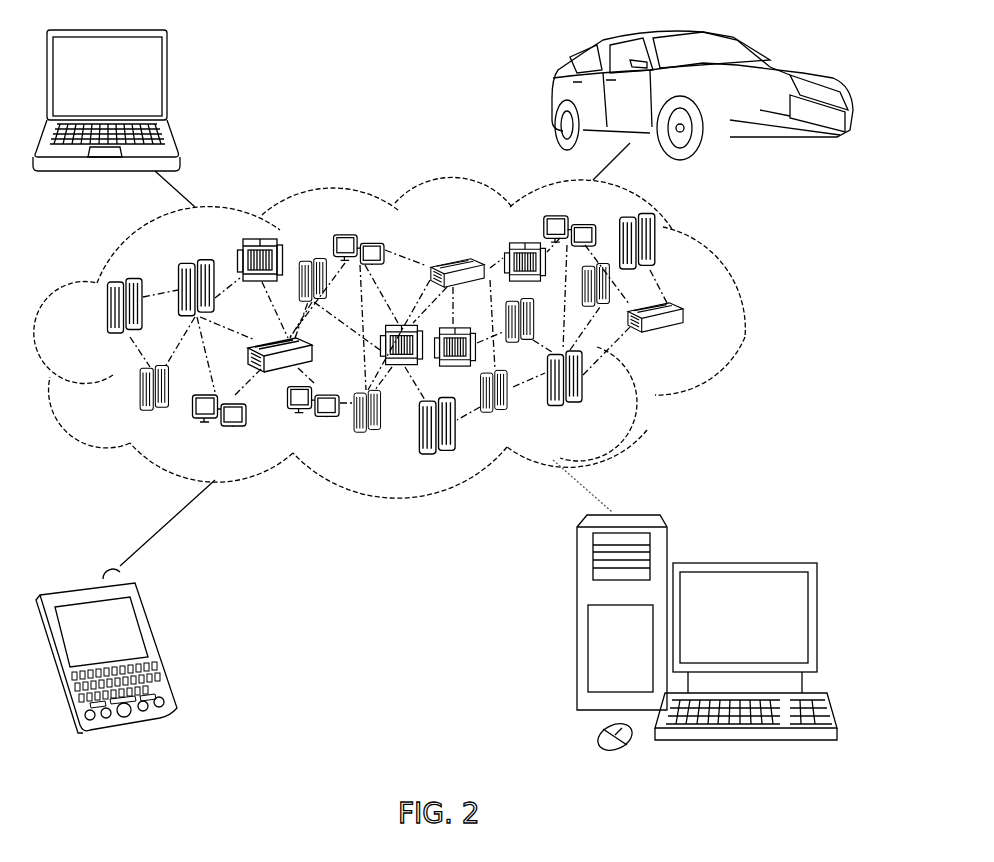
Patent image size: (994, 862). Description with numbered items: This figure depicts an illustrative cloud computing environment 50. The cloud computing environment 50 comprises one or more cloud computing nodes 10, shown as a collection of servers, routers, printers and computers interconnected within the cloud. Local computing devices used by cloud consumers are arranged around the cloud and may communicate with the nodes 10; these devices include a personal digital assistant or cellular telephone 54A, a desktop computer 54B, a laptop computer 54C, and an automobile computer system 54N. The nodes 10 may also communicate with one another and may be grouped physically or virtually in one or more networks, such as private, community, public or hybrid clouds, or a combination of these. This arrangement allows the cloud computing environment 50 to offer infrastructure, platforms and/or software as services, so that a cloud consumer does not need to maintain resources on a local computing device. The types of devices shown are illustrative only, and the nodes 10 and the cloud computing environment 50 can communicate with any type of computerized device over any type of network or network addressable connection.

The cloud computing nodes 10 is at (703, 342).
The cloud computing environment 50 is at (743, 315).
The personal digital assistant or cellular telephone 54A is at (158, 643).
The desktop computer 54B is at (741, 563).
The laptop computer 54C is at (167, 80).
The automobile computer system 54N is at (548, 96).